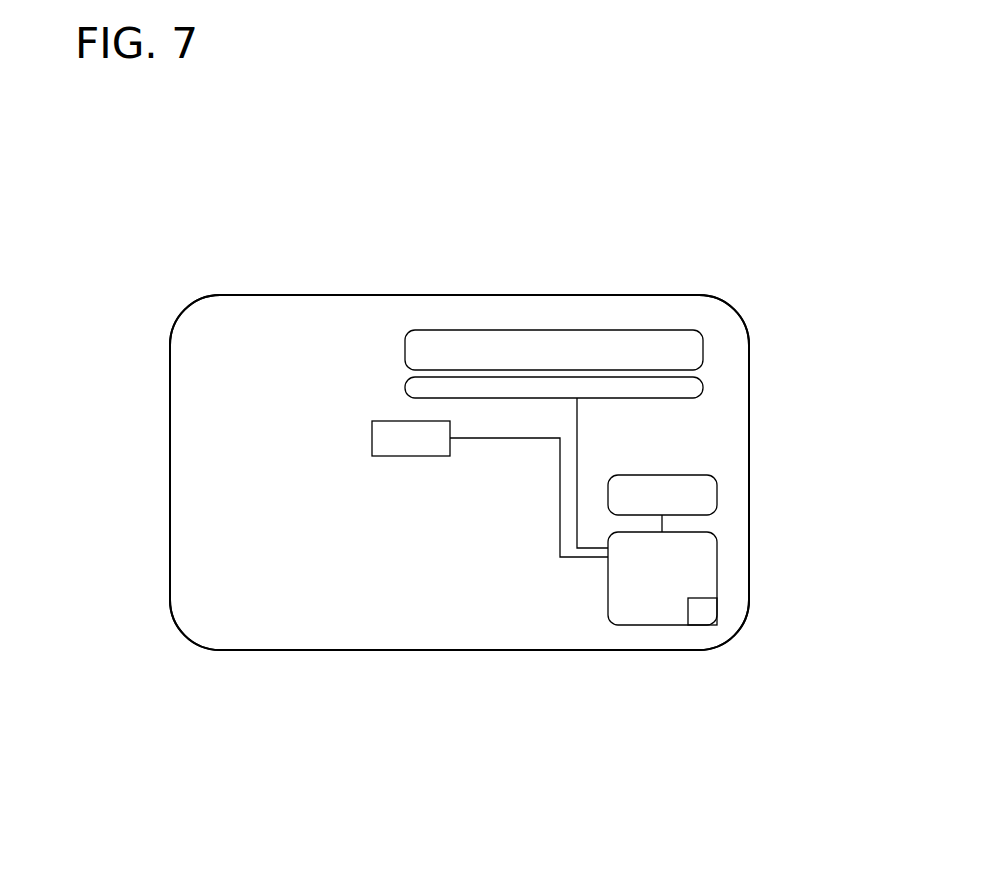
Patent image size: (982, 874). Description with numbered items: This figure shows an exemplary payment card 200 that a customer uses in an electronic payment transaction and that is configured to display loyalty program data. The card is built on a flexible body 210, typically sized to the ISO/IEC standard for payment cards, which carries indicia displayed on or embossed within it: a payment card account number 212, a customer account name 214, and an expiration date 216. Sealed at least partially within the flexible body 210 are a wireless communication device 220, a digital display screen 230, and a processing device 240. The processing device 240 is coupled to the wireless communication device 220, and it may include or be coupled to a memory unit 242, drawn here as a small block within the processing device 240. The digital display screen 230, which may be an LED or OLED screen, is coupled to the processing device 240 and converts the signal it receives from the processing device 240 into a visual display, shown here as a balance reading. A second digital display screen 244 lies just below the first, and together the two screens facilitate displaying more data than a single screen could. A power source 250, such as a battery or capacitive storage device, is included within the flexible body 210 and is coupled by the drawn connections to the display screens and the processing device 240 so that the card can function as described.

The payment card 200 is at (565, 276).
The flexible body 210 is at (258, 651).
The payment card account number 212 is at (246, 495).
The customer account name 214 is at (236, 576).
The expiration date 216 is at (532, 604).
The wireless communication device 220 is at (717, 492).
The digital display screen 230 is at (658, 330).
The processing device 240 is at (640, 626).
The memory unit 242 is at (703, 598).
The second digital display screen 244 is at (703, 386).
The power source 250 is at (391, 421).